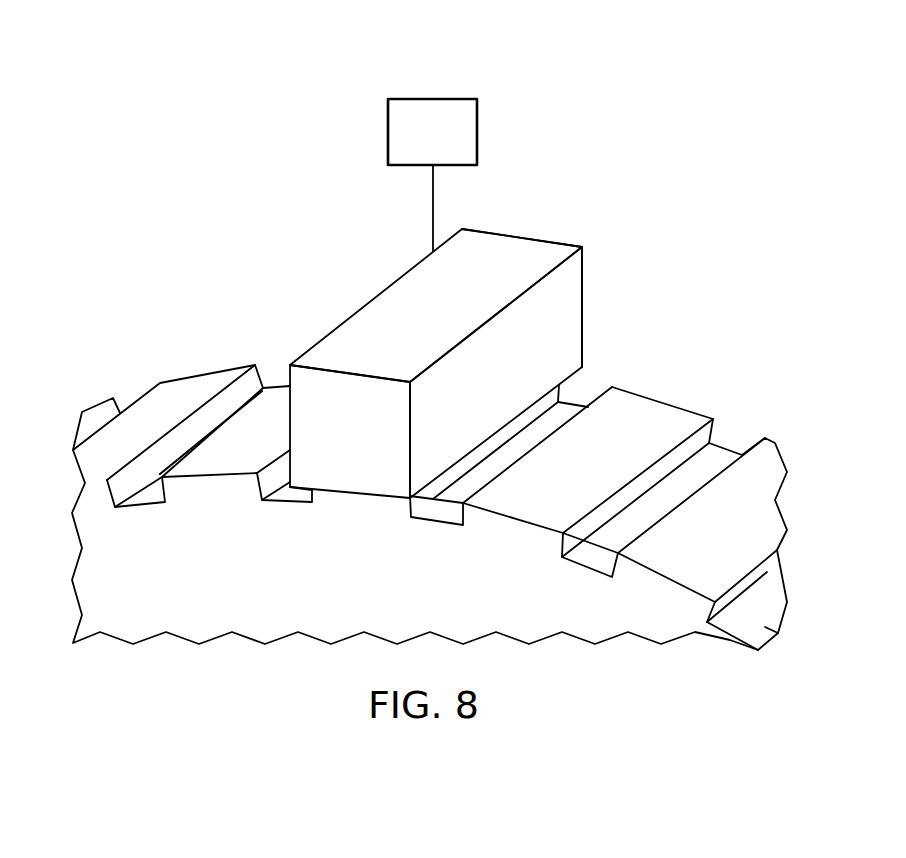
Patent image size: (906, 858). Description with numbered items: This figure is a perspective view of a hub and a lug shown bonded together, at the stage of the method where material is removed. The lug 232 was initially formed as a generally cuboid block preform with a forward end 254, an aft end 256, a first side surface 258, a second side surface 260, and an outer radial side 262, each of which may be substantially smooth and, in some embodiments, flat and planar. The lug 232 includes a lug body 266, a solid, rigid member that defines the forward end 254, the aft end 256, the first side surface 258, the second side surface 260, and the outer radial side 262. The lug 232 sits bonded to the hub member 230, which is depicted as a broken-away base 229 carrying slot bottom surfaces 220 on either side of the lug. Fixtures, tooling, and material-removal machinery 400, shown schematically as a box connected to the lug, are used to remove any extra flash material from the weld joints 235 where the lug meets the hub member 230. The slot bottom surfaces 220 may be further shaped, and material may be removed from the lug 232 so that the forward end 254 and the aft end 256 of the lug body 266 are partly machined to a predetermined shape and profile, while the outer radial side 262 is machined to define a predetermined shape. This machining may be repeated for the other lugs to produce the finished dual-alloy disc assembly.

The slot bottom surface 220 is at (565, 413).
The base plate 229 is at (414, 551).
The hub member 230 is at (338, 497).
The lug 232 is at (468, 321).
The weld joint 235 is at (421, 496).
The forward end 254 is at (367, 397).
The aft end 256 is at (583, 280).
The first side surface 258 is at (285, 387).
The second side surface 260 is at (565, 320).
The outer radial side 262 is at (537, 248).
The lug body 266 is at (522, 196).
The fixtures, tooling, and material-removal machinery 400 is at (441, 128).